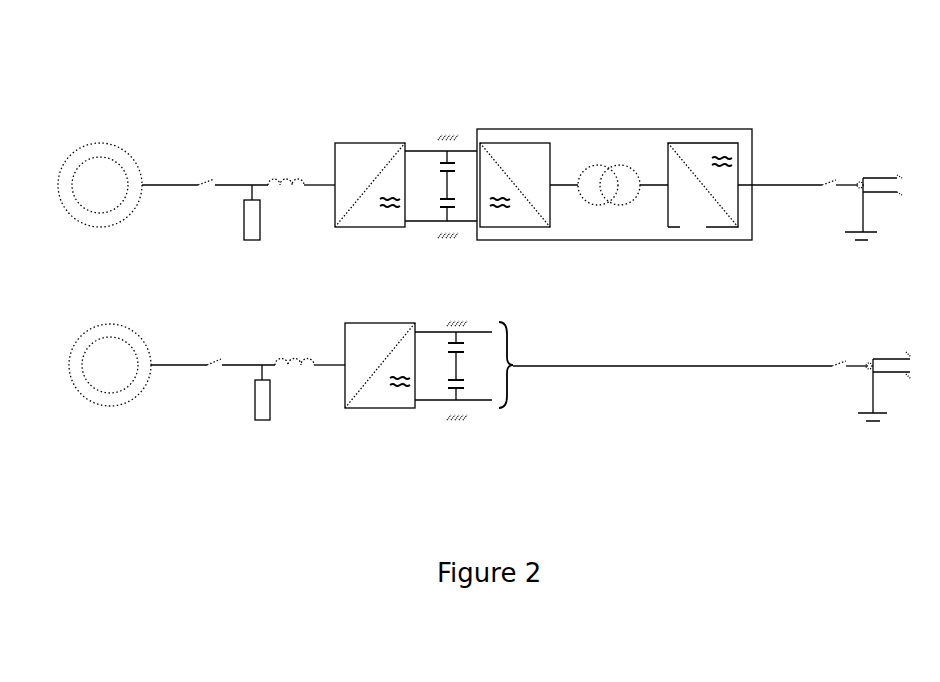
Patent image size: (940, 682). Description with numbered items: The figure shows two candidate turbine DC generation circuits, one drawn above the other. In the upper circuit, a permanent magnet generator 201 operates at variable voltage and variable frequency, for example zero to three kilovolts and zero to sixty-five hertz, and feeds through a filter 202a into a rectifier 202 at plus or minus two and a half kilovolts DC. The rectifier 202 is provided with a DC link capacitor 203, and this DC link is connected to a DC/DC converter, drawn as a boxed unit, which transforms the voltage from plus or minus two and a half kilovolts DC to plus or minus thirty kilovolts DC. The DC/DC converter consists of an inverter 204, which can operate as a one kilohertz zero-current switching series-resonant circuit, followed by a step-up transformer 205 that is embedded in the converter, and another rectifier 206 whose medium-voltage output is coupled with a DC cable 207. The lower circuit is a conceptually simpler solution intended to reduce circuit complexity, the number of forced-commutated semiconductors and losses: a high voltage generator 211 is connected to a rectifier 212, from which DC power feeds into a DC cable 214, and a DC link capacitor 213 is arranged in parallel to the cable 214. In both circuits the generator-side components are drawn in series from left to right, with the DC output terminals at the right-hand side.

The permanent magnet generator 201 is at (103, 140).
The filter 202a is at (275, 166).
The rectifier 202 is at (365, 141).
The DC link capacitor 203 is at (447, 142).
The inverter 204 is at (517, 142).
The step-up transformer 205 is at (607, 162).
The rectifier 206 is at (710, 142).
The DC cable 207 is at (885, 166).
The high voltage generator 211 is at (108, 412).
The rectifier 212 is at (372, 416).
The DC link capacitor 213 is at (455, 428).
The DC cable 214 is at (685, 373).